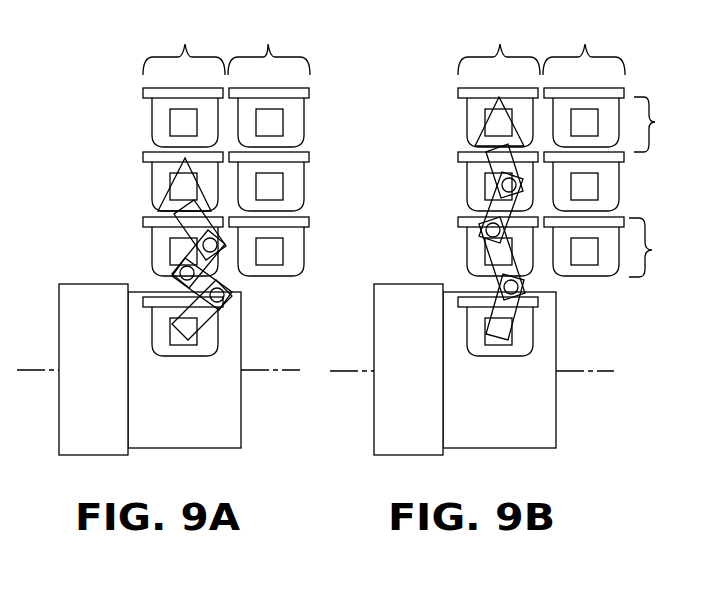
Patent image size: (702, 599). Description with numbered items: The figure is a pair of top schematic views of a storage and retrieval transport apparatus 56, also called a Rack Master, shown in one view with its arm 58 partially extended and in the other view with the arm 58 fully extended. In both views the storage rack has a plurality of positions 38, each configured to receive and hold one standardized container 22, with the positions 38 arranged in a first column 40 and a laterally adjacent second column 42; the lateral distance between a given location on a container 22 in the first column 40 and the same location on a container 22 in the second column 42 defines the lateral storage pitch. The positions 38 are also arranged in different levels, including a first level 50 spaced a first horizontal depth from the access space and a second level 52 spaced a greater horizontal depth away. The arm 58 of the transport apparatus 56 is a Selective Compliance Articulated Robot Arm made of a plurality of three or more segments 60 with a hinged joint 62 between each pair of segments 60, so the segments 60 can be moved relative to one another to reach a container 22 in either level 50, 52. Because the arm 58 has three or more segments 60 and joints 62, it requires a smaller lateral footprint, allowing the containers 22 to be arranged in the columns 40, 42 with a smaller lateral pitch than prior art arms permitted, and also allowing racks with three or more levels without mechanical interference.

In FIG. 9A, the standardized container 22 is at (232, 144).
In FIG. 9B, the standardized container 22 is at (534, 145).
In FIG. 9A, the position 38 is at (140, 118).
In FIG. 9B, the position 38 is at (456, 120).
In FIG. 9A, the first column 40 is at (184, 44).
In FIG. 9B, the first column 40 is at (499, 44).
In FIG. 9A, the second column 42 is at (269, 44).
In FIG. 9B, the second column 42 is at (584, 44).
In FIG. 9B, the first level 50 is at (655, 247).
In FIG. 9B, the second level 52 is at (660, 124).
In FIG. 9A, the storage and retrieval transport apparatus 56 is at (90, 278).
In FIG. 9B, the storage and retrieval transport apparatus 56 is at (391, 280).
In FIG. 9A, the arm 58 is at (155, 249).
In FIG. 9B, the arm 58 is at (537, 218).
In FIG. 9A, the segment 60 is at (176, 214).
In FIG. 9B, the segment 60 is at (496, 298).
In FIG. 9A, the hinged joint 62 is at (222, 212).
In FIG. 9B, the hinged joint 62 is at (533, 176).